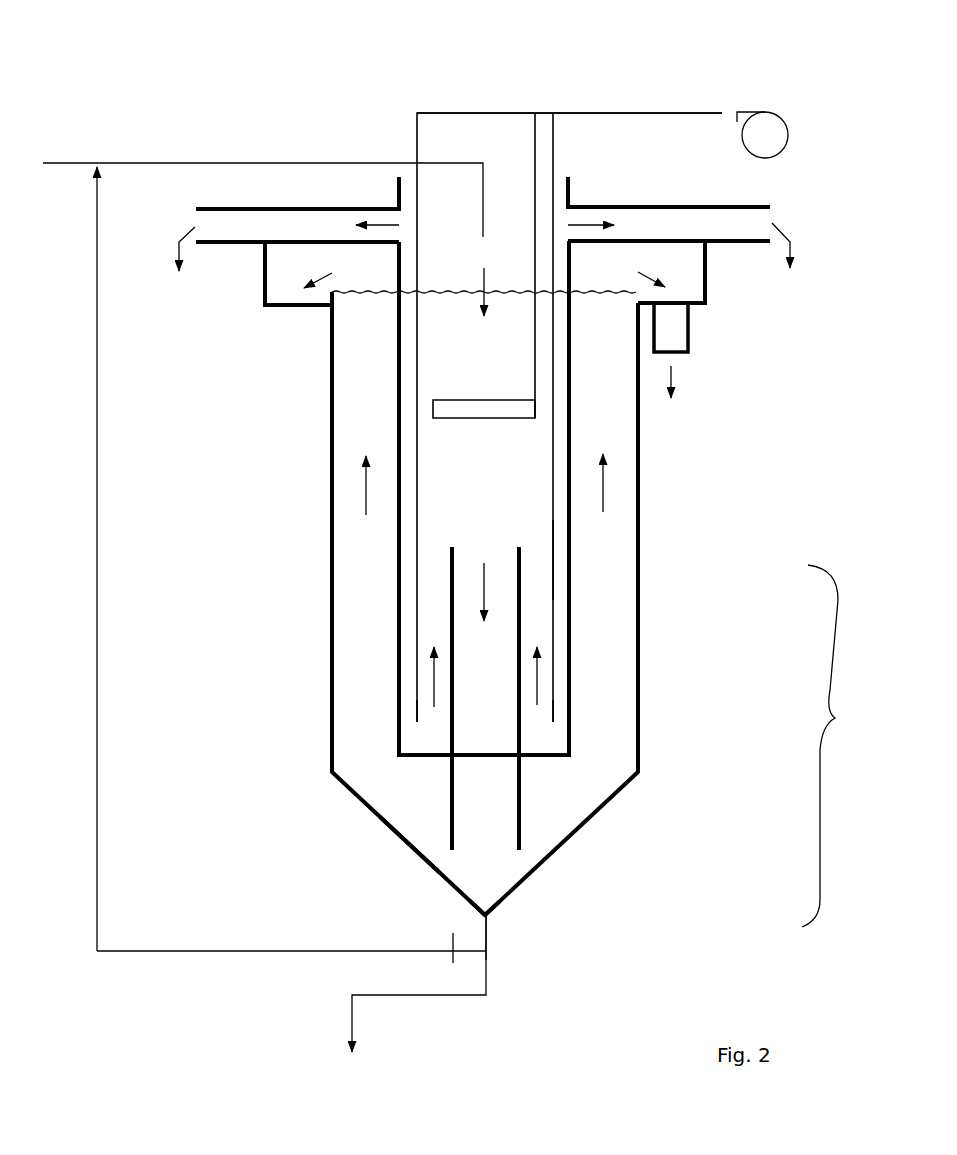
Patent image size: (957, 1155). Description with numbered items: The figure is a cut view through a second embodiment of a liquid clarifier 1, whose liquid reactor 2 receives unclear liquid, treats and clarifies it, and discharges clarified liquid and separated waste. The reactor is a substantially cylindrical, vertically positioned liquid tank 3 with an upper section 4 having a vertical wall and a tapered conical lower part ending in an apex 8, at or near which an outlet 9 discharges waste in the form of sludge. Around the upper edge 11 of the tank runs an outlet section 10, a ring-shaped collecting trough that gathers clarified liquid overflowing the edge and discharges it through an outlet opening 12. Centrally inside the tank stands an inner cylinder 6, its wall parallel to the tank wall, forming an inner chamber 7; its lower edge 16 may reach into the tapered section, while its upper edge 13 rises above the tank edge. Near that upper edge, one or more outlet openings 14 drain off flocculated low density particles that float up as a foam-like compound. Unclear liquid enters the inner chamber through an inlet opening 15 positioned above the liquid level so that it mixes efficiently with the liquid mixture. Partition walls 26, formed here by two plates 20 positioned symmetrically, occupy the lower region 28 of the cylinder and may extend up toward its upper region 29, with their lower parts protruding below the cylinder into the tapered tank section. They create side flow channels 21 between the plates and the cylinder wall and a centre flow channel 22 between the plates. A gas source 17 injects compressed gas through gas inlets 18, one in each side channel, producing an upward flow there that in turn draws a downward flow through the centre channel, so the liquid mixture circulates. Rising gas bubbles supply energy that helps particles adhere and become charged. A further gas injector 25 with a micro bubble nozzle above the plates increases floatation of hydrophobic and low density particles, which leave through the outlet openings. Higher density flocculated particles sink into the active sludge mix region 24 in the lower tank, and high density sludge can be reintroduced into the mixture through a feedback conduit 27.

The liquid clarifier 1 is at (570, 69).
The liquid reactor 2 is at (684, 440).
The liquid tank 3 is at (640, 585).
The upper section 4 is at (682, 482).
The inner cylinder 6 is at (572, 557).
The inner chamber 7 is at (537, 548).
The apex 8 is at (502, 936).
The outlet 9 is at (488, 915).
The outlet section 10 is at (736, 295).
The upper edge 11 is at (332, 292).
The outlet opening 12 is at (677, 353).
The upper edge 13 is at (399, 177).
The outlet openings 14 is at (770, 217).
The inlet opening 15 is at (483, 237).
The lower edge 16 is at (405, 757).
The gas source 17 is at (773, 137).
The gas inlets 18 is at (417, 717).
The plates 20 is at (522, 828).
The side flow channels 21 is at (558, 625).
The centre flow channel 22 is at (488, 733).
The active sludge mix region 24 is at (843, 746).
The gas injector 25 is at (525, 409).
The partition walls 26 is at (431, 830).
The feedback conduit 27 is at (98, 722).
The lower region 28 is at (379, 622).
The upper region 29 is at (378, 375).